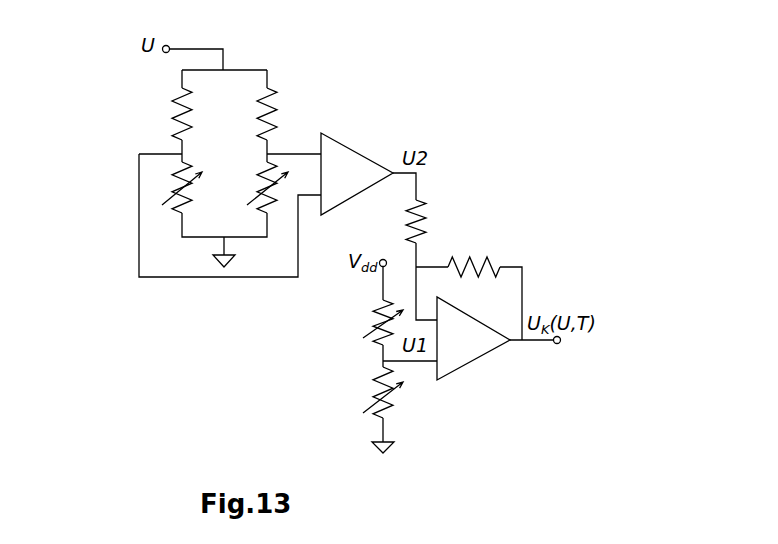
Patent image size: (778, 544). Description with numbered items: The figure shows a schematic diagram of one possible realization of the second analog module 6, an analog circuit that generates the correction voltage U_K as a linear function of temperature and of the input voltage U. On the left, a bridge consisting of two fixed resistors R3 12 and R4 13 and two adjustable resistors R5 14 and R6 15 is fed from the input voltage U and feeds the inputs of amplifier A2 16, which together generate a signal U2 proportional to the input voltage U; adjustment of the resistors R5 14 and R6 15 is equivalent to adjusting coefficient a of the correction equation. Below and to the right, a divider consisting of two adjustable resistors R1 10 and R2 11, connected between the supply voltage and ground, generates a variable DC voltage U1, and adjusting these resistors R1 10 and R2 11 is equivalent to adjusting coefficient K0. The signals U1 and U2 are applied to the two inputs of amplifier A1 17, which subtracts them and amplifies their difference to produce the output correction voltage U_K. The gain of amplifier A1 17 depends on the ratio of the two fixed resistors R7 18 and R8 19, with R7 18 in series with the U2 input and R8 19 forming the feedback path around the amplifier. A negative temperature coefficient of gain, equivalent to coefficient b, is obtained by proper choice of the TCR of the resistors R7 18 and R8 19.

The second analog module 6 is at (541, 78).
The adjustable resistor R1 10 is at (383, 347).
The adjustable resistor R2 11 is at (395, 413).
The fixed resistor R3 12 is at (177, 100).
The fixed resistor R4 13 is at (275, 92).
The adjustable resistor R5 14 is at (187, 169).
The adjustable resistor R6 15 is at (262, 207).
The amplifier A2 16 is at (333, 137).
The amplifier A1 17 is at (493, 350).
The fixed resistor R7 18 is at (418, 199).
The fixed resistor R8 19 is at (488, 262).